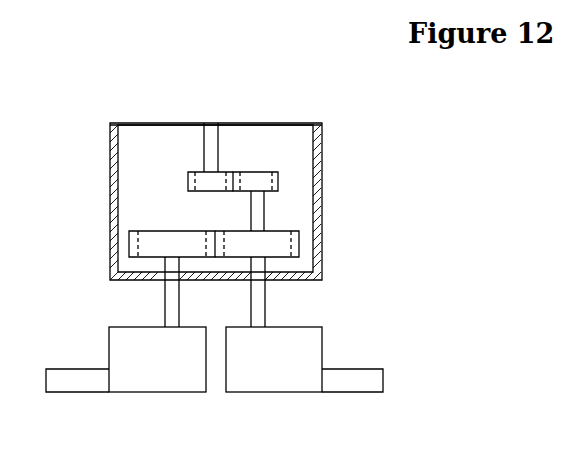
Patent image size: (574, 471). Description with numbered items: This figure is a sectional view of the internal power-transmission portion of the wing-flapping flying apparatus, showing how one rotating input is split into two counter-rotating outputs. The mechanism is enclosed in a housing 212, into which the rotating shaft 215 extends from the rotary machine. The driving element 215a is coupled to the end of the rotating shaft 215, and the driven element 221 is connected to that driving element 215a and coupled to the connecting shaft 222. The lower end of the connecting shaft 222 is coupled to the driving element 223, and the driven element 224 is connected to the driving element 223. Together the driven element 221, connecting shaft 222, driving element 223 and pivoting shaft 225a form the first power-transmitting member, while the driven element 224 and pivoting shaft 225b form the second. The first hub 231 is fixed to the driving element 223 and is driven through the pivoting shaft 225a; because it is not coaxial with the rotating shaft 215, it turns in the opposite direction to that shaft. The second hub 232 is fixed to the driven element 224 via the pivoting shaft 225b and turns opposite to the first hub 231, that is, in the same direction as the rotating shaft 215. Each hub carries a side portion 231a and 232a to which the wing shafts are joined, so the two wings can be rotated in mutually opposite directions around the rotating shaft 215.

The housing 212 is at (319, 134).
The rotating shaft 215 is at (213, 140).
The driving element 215a is at (188, 180).
The driven element 221 is at (257, 177).
The connecting shaft 222 is at (258, 204).
The driving element 223 is at (280, 231).
The driven element 224 is at (158, 230).
The pivoting shaft 225a is at (261, 302).
The pivoting shaft 225b is at (170, 301).
The first hub 231 is at (275, 384).
The drive unit mount 231a is at (351, 384).
The second hub 232 is at (155, 385).
The drive unit mount 232a is at (78, 386).